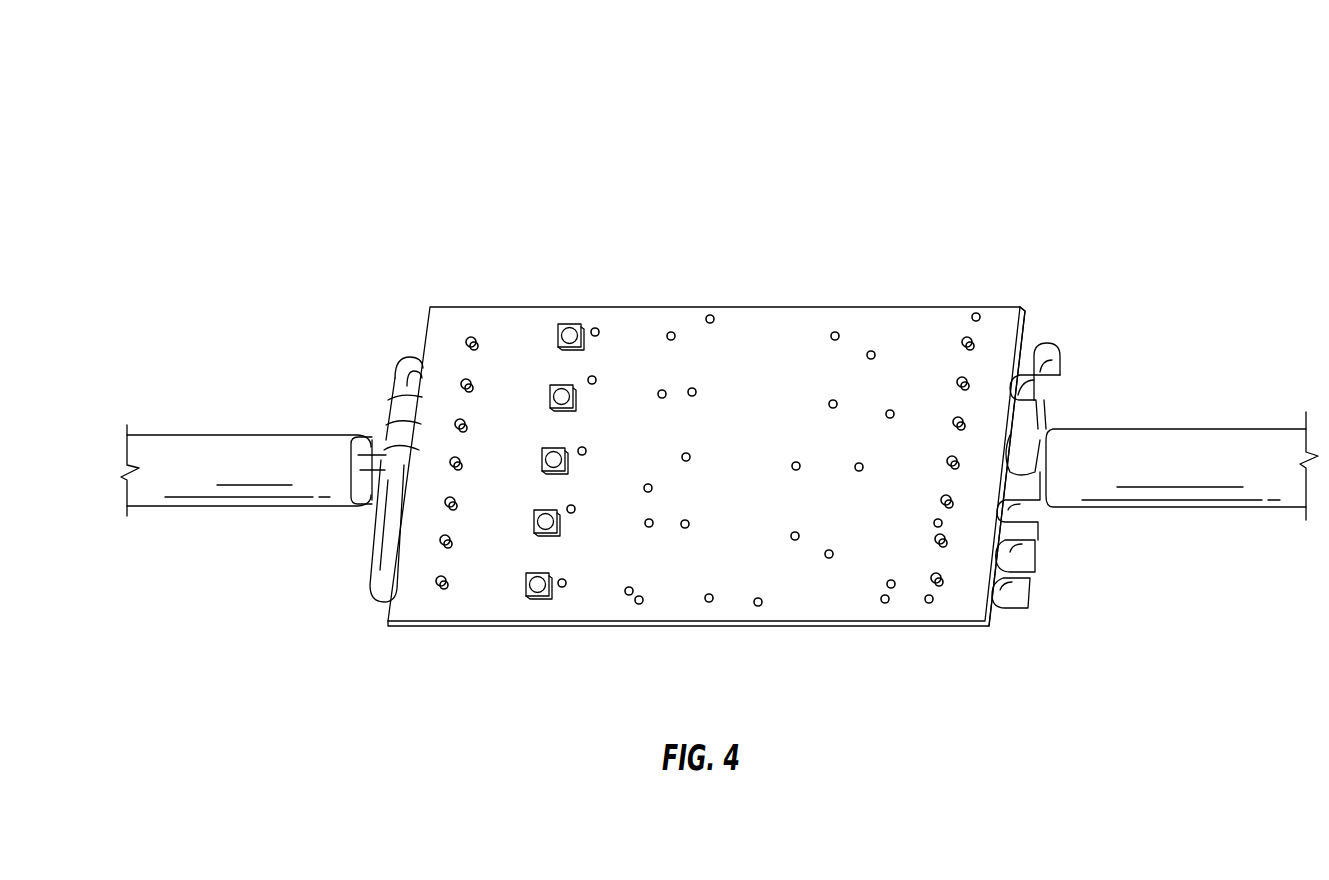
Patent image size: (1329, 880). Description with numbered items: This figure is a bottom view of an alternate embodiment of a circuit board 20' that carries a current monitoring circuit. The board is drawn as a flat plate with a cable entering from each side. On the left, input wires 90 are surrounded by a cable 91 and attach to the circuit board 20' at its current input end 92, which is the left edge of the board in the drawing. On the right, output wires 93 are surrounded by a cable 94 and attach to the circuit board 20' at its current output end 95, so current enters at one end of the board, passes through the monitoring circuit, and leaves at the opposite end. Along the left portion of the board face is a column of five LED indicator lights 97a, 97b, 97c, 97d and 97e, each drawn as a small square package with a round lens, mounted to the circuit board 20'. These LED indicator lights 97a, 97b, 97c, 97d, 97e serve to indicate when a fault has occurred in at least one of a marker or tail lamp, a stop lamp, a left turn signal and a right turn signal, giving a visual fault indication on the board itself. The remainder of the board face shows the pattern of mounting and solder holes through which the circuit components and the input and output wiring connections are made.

The circuit board 20' is at (719, 359).
The input wires 90 is at (393, 389).
The cable 91 is at (223, 418).
The current input end 92 is at (428, 321).
The output wires 93 is at (1060, 348).
The cable 94 is at (1178, 420).
The current output end 95 is at (1008, 307).
The LED indicator light 97a is at (571, 323).
The LED indicator light 97b is at (574, 406).
The LED indicator light 97c is at (566, 464).
The LED indicator light 97d is at (558, 528).
The LED indicator light 97e is at (533, 599).